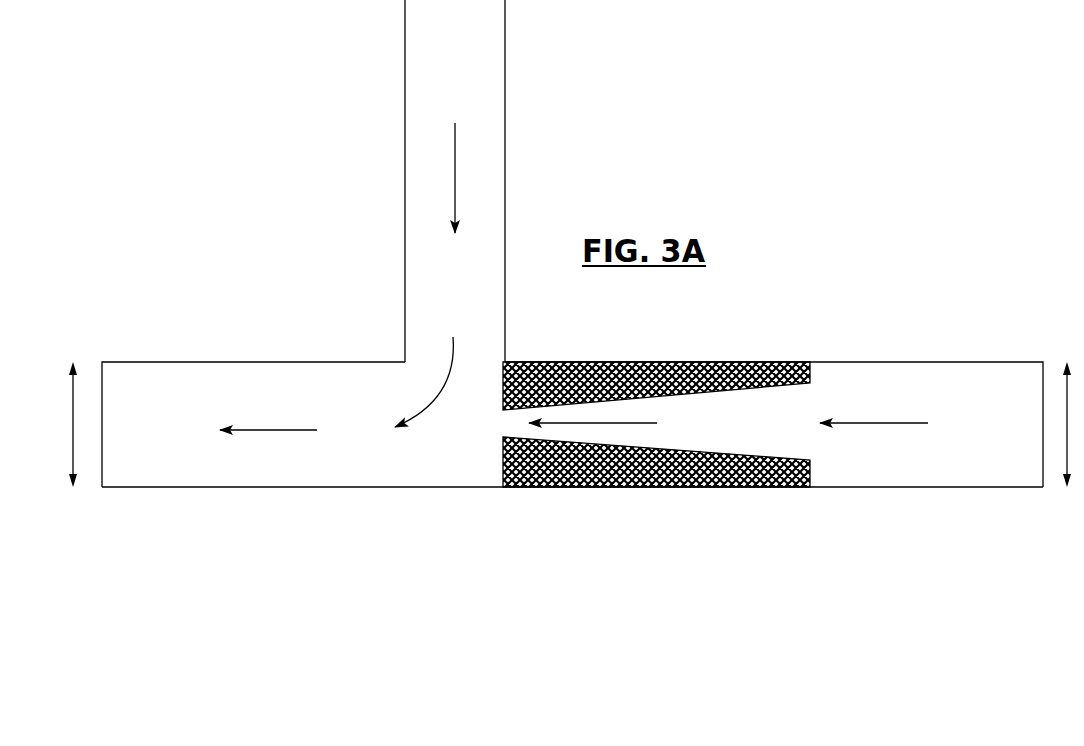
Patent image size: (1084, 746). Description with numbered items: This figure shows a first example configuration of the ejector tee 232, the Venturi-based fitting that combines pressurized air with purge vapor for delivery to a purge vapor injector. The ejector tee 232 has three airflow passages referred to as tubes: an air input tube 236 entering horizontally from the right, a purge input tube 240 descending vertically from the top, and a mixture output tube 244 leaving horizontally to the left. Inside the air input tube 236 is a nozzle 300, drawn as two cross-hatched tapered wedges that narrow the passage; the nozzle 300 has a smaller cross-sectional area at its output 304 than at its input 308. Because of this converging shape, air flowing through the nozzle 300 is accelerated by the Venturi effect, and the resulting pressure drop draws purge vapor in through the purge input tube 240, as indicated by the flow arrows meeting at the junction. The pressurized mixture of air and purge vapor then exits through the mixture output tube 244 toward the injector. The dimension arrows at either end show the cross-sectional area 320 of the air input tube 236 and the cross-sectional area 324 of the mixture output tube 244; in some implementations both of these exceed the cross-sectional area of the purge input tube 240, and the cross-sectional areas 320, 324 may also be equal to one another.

The ejector tee 232 is at (222, 194).
The purge input tube 240 is at (405, 153).
The mixture output tube 244 is at (245, 362).
The air input tube 236 is at (908, 362).
The output of nozzle 304 is at (528, 388).
The input of nozzle 308 is at (810, 462).
The nozzle 300 is at (481, 462).
The cross-sectional area of mixture output tube 324 is at (75, 424).
The cross-sectional area of air input tube 320 is at (1067, 424).